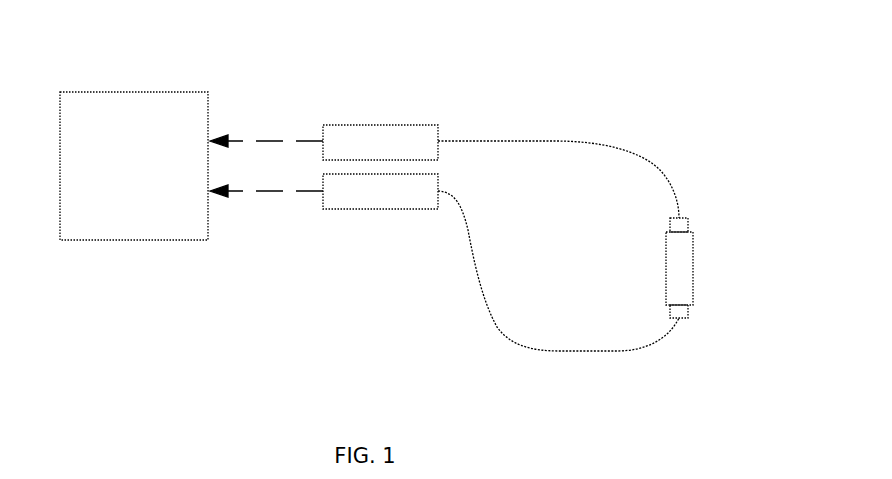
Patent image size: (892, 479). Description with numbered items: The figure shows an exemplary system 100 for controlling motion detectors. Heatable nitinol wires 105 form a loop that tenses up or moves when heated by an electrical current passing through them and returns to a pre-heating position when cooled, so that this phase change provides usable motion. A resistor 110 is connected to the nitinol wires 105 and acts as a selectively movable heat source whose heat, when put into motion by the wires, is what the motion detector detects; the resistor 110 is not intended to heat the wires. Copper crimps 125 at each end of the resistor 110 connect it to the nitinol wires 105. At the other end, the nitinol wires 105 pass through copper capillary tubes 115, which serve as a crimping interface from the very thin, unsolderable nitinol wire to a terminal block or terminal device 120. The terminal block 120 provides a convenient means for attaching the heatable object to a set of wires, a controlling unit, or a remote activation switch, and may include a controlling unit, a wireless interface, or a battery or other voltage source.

The system 100 is at (133, 362).
The nitinol wires 105 is at (674, 146).
The resistor 110 is at (711, 267).
The copper capillary tubes 115 is at (458, 158).
The terminal block 120 is at (217, 83).
The copper crimps 125 is at (703, 218).